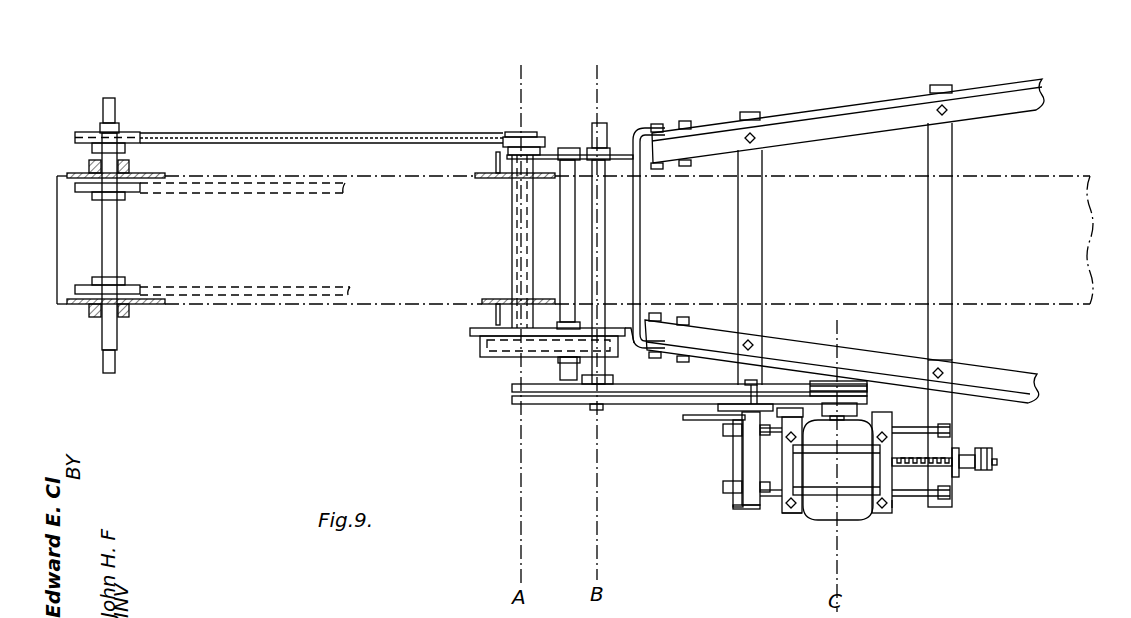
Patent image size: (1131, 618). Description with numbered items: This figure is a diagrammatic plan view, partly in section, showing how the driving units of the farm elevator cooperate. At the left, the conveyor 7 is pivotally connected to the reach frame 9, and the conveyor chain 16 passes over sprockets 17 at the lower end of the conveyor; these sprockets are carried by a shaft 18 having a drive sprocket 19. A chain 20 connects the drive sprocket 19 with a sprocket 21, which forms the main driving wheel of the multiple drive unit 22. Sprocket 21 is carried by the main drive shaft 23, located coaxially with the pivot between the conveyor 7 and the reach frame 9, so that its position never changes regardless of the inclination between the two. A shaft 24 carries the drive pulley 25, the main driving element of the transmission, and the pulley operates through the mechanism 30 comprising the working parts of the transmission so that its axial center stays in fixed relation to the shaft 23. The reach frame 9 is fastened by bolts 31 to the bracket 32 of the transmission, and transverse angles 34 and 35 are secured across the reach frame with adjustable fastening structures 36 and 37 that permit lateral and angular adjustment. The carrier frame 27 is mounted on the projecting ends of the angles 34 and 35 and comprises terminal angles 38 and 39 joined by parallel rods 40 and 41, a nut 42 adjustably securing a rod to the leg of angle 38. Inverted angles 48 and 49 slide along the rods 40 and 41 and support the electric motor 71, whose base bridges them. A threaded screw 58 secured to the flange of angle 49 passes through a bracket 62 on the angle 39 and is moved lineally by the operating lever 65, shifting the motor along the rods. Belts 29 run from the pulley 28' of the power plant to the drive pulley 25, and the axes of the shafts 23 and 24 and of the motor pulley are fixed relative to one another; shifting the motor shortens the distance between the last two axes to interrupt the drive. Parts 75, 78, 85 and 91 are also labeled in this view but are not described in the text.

The conveyor 7 is at (78, 173).
The reach frame 9 is at (858, 102).
The conveyor chain 16 is at (272, 198).
The sprockets 17 is at (130, 192).
The shaft 18 is at (115, 236).
The drive sprocket 19 is at (130, 131).
The chain 20 is at (335, 133).
The sprocket 21 is at (540, 135).
The multiple drive unit 22 is at (605, 231).
The main drive shaft 23 is at (518, 132).
The shaft 24 is at (600, 125).
The drive pulley 25 is at (625, 405).
The carrier frame 27 is at (906, 510).
The pulley 28' is at (847, 369).
The belts 29 is at (545, 393).
The mechanism 30 is at (496, 356).
The bolts 31 is at (659, 142).
The bracket 32 is at (641, 256).
The transverse angle 34 is at (765, 230).
The transverse angle 35 is at (954, 236).
The adjustable fastening structure 36 is at (754, 134).
The adjustable fastening structure 37 is at (946, 112).
The terminal angle 38 is at (748, 509).
The terminal angle 39 is at (938, 507).
The rod 40 is at (760, 479).
The rod 41 is at (772, 492).
The nut 42 is at (752, 455).
The inverted angle 48 is at (792, 512).
The inverted angle 49 is at (881, 412).
The threaded screw 58 is at (902, 456).
The bracket 62 is at (960, 448).
The operating lever 65 is at (1000, 463).
The electric motor 71 is at (820, 513).
The bar 75 is at (733, 405).
The angle bracket 78 is at (735, 437).
The clip 85 is at (781, 410).
The pin 91 is at (760, 384).